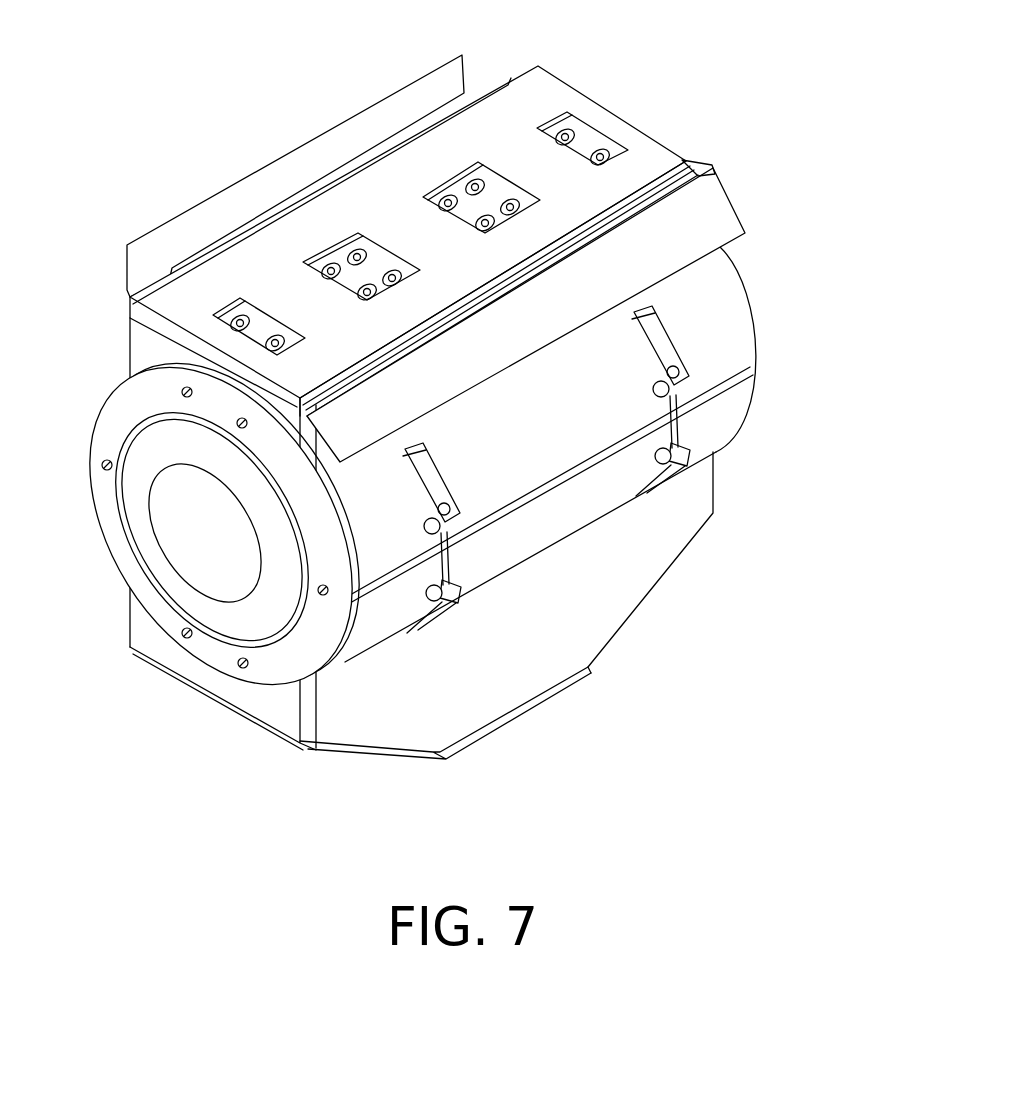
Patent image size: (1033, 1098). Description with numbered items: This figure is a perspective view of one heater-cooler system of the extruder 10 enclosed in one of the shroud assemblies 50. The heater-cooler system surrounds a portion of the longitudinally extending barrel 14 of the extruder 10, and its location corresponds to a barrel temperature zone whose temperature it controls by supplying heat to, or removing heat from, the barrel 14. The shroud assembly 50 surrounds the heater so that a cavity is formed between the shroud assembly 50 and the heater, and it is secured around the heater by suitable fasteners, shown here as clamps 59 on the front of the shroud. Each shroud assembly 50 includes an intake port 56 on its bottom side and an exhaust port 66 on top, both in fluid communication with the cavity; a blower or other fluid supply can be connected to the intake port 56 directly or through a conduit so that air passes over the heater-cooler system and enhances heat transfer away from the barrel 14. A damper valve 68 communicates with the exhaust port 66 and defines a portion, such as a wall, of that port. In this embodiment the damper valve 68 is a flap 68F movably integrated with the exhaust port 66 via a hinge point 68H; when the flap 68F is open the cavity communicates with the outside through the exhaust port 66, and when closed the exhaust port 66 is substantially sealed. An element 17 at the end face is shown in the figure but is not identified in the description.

The extruder 10 is at (614, 63).
The barrel 14 is at (275, 617).
The opening 17 is at (185, 507).
The shroud assembly 50 is at (528, 532).
The intake port 56 is at (383, 710).
The clamps 59 is at (462, 515).
The exhaust port 66 is at (225, 538).
The damper valve 68 is at (573, 266).
The flap 68F is at (717, 212).
The hinge point 68H is at (697, 163).